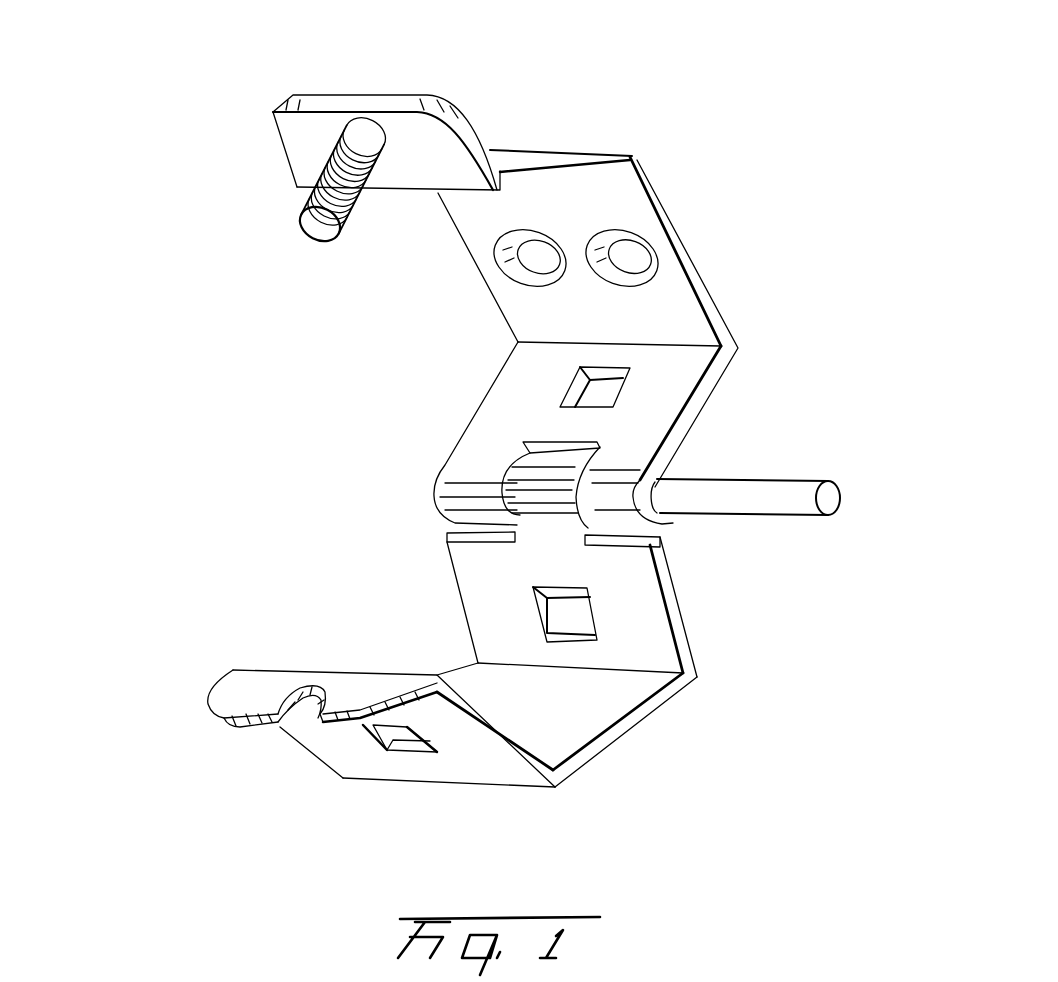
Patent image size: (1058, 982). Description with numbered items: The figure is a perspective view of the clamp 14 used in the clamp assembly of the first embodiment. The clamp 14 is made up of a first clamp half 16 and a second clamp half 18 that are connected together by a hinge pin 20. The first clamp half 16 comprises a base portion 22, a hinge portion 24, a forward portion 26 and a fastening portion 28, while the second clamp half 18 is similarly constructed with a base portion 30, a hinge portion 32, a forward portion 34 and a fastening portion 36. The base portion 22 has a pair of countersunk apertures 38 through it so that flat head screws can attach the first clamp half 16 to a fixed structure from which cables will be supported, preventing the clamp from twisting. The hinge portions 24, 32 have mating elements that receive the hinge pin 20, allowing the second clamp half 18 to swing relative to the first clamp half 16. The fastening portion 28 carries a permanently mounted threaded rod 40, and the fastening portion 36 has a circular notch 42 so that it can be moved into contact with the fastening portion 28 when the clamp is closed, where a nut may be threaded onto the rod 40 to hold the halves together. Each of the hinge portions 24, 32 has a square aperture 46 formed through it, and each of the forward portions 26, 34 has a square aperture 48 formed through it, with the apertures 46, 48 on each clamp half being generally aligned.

The clamp 14 is at (743, 193).
The first clamp half 16 is at (742, 326).
The second clamp half 18 is at (702, 696).
The hinge pin 20 is at (797, 470).
The base portion 22 is at (505, 297).
The hinge portion 24 is at (495, 392).
The forward portion 26 is at (570, 170).
The fastening portion 28 is at (270, 150).
The base portion 30 is at (623, 738).
The hinge portion 32 is at (688, 613).
The forward portion 34 is at (510, 745).
The fastening portion 36 is at (238, 697).
The countersunk apertures 38 is at (632, 283).
The threaded rod 40 is at (315, 222).
The circular notch 42 is at (305, 690).
The square aperture 46 is at (630, 380).
The square aperture 48 is at (380, 752).